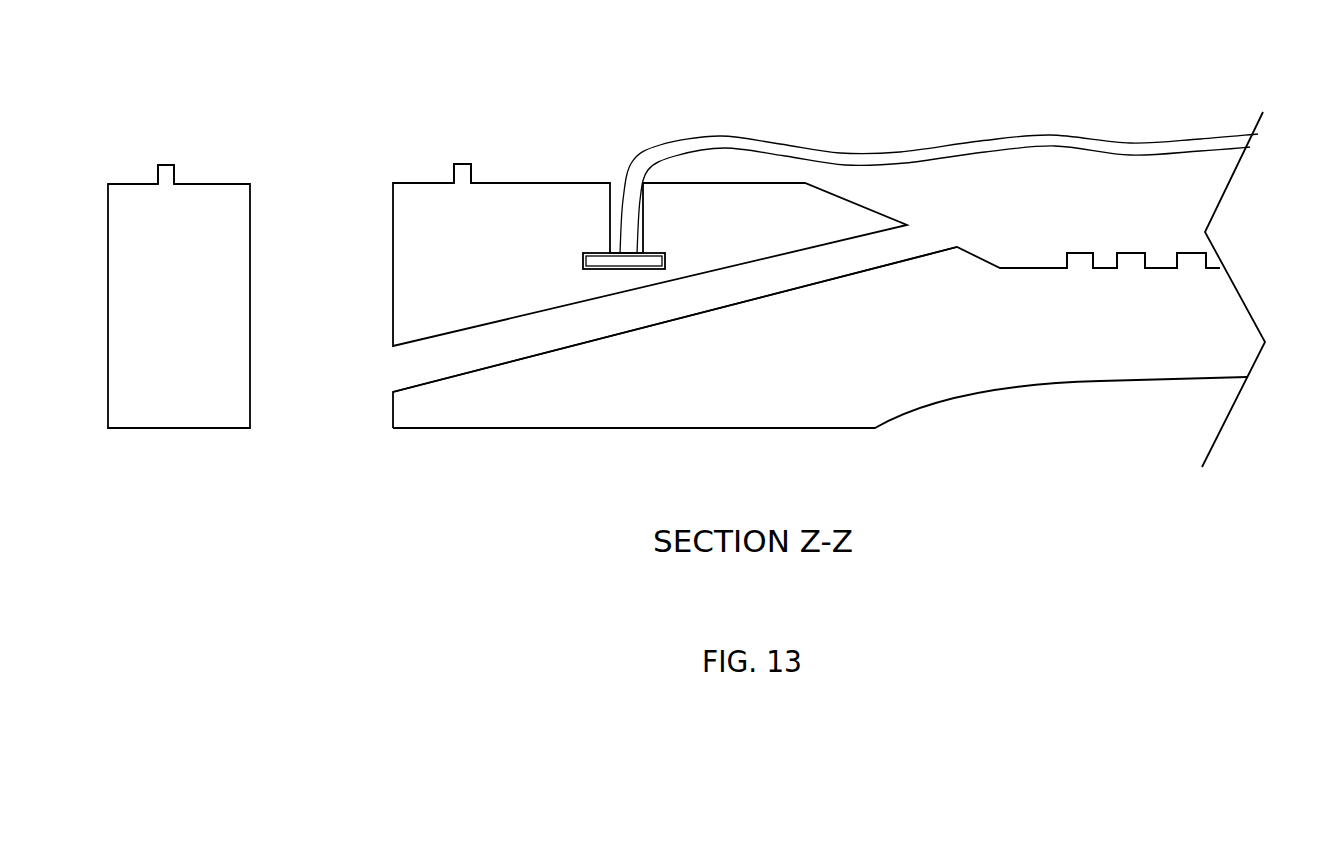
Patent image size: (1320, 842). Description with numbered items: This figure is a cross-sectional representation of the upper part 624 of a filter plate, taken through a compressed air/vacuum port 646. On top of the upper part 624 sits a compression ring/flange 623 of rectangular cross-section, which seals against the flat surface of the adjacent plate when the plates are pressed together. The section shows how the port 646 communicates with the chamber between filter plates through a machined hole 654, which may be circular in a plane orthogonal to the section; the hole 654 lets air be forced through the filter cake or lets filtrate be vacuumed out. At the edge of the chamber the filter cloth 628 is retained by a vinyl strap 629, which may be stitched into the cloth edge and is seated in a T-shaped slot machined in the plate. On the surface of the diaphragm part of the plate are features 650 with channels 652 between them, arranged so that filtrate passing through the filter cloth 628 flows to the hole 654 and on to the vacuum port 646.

The compression ring/flange 623 is at (168, 172).
The upper part 624 is at (189, 409).
The filter cloth 628 is at (937, 153).
The vinyl strap 629 is at (598, 258).
The compressed air/vacuum port 646 is at (316, 369).
The features 650 is at (1132, 262).
The channels 652 is at (1163, 257).
The machined hole 654 is at (520, 340).